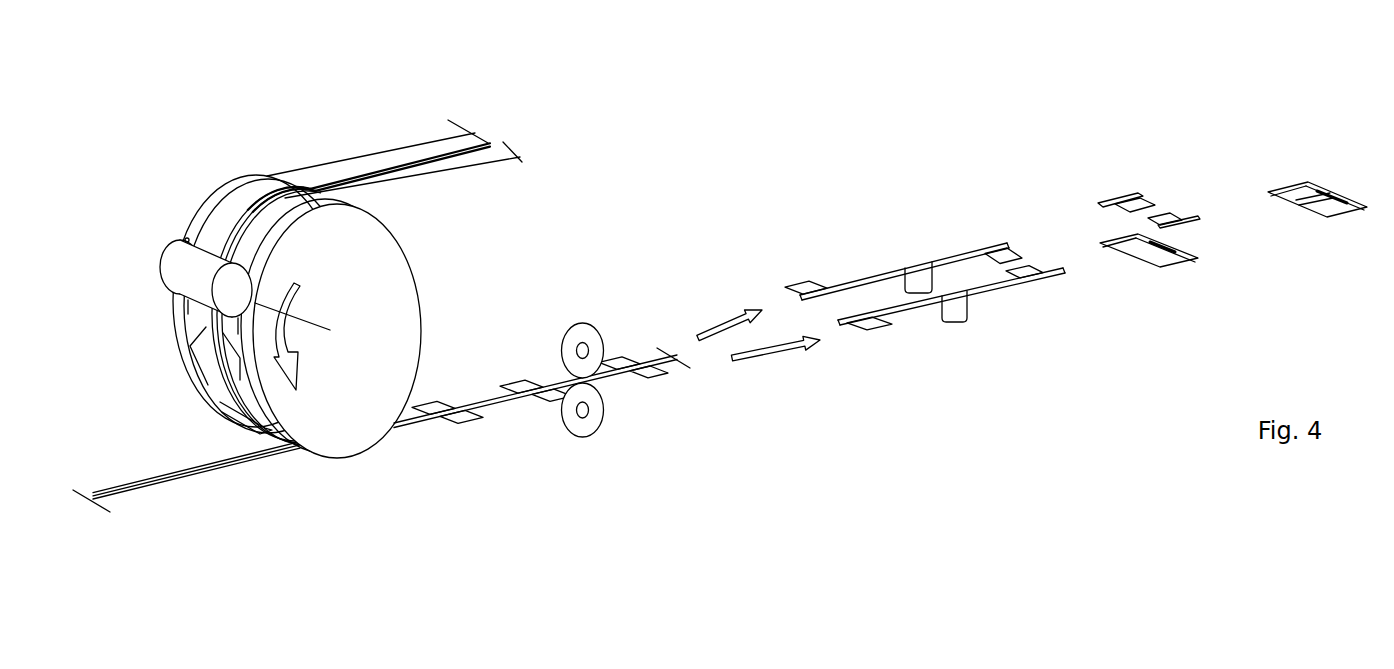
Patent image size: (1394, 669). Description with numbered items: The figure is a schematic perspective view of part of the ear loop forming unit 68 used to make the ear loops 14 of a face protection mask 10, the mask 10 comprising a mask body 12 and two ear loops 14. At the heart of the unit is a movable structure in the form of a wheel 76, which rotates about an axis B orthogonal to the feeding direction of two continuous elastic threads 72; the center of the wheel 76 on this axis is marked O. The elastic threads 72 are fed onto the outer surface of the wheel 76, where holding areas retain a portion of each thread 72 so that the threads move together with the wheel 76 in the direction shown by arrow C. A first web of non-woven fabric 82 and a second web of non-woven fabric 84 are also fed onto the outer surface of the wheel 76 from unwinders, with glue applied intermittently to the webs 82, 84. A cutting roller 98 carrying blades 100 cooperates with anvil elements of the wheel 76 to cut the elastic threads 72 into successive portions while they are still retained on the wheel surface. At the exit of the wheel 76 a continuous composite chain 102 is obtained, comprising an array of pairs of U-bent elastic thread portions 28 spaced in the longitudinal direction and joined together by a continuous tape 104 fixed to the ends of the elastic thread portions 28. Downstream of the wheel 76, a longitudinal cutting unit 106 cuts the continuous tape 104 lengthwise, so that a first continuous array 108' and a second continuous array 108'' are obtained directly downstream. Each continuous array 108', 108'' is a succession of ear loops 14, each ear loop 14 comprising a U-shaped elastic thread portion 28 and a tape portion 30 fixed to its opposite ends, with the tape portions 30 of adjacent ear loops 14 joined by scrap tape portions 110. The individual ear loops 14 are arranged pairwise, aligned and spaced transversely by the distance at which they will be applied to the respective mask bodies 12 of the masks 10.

The face protection mask 10 is at (1308, 219).
The mask body 12 is at (1143, 260).
The ear loop 14 is at (1117, 190).
The elastic thread portion 28 is at (438, 400).
The tape portion 30 is at (1138, 195).
The ear loop forming unit 68 is at (360, 99).
The continuous elastic thread 72 is at (438, 139).
The wheel 76 is at (273, 128).
The first web of non-woven fabric 82 is at (486, 141).
The second web of non-woven fabric 84 is at (160, 490).
The cutting roller 98 is at (168, 267).
The blade 100 is at (187, 239).
The continuous composite chain 102 is at (579, 507).
The continuous tape 104 is at (503, 408).
The longitudinal cutting unit 106 is at (598, 283).
The first continuous array 108' is at (904, 229).
The second continuous array 108'' is at (956, 312).
The scrap tape portion 110 is at (962, 252).
The axis B is at (352, 340).
The arrow C is at (248, 208).
The center O is at (336, 335).